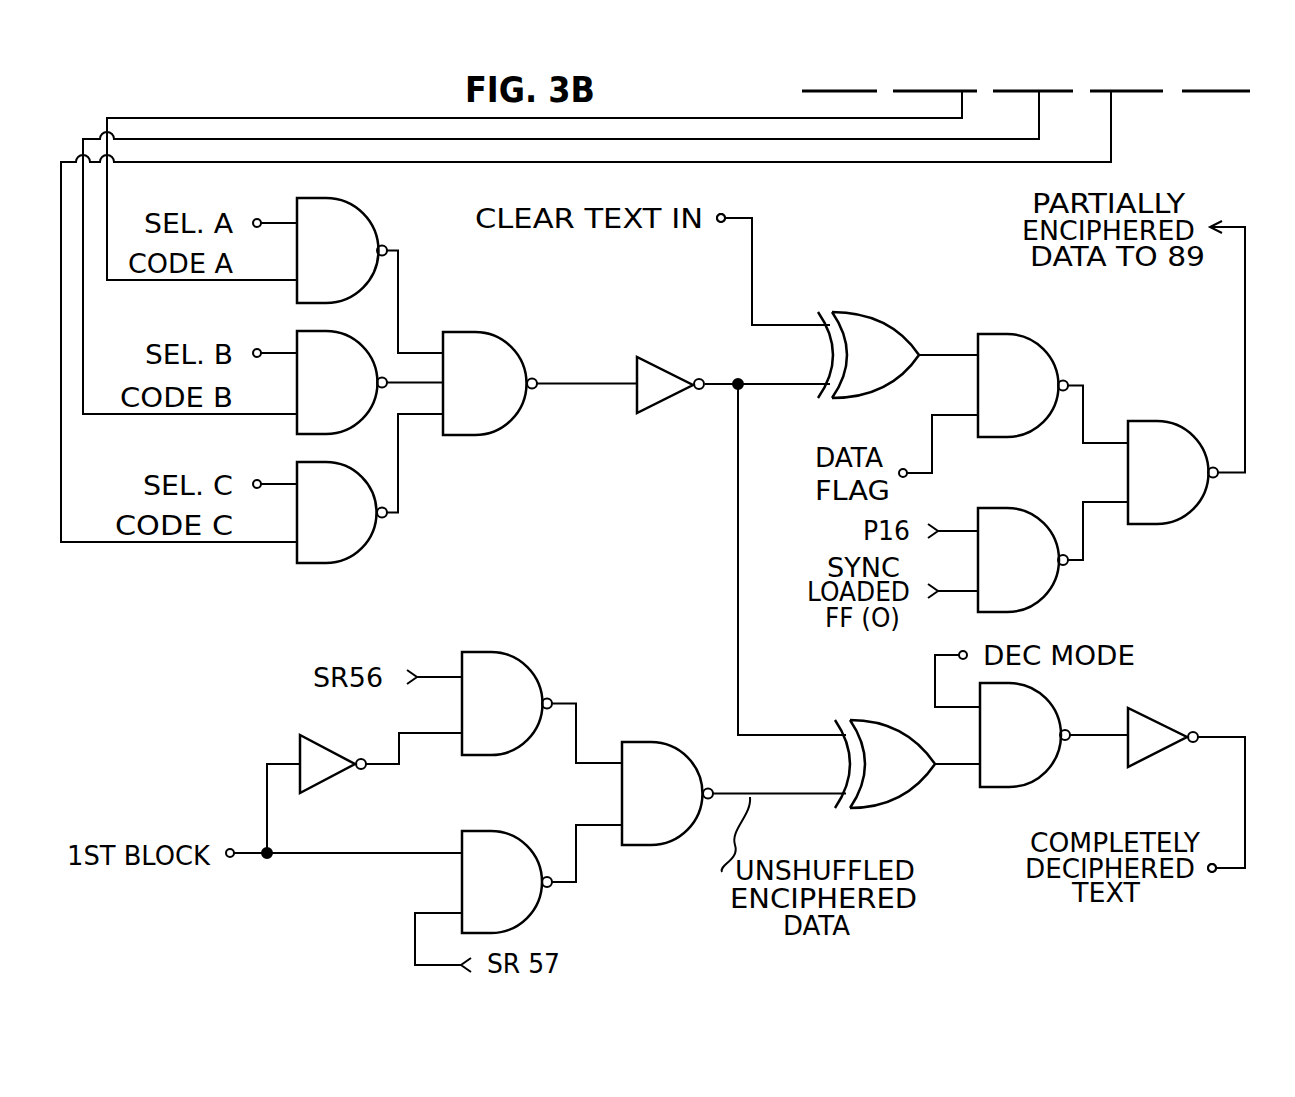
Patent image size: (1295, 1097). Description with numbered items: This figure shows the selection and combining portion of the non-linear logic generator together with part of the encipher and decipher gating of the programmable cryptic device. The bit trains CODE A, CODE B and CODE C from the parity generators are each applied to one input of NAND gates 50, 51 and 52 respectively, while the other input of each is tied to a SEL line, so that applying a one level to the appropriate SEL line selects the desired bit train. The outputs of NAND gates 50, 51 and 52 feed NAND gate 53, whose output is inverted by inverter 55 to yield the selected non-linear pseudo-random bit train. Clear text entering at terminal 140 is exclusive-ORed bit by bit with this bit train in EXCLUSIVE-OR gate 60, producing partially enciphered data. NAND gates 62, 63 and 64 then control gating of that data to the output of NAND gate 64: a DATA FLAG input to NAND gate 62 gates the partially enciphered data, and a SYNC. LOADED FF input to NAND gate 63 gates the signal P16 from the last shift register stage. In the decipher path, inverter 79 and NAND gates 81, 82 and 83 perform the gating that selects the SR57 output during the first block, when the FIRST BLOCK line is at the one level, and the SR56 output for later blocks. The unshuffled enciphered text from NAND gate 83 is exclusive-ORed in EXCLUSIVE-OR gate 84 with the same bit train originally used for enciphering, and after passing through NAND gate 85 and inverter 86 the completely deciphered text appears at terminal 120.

The NAND gate 50 is at (358, 236).
The NAND gate 51 is at (333, 348).
The NAND gate 52 is at (350, 530).
The NAND gate 53 is at (492, 345).
The inverter 55 is at (648, 372).
The terminal 140 is at (725, 225).
The EXCLUSIVE-OR gate 60 is at (855, 322).
The NAND gate 62 is at (1010, 340).
The NAND gate 63 is at (1038, 585).
The NAND gate 64 is at (1150, 425).
The inverter 79 is at (312, 758).
The NAND gate 81 is at (512, 668).
The NAND gate 82 is at (495, 846).
The NAND gate 83 is at (658, 752).
The EXCLUSIVE-OR gate 84 is at (898, 793).
The NAND gate 85 is at (1028, 770).
The inverter 86 is at (1158, 730).
The terminal 120 is at (1215, 873).